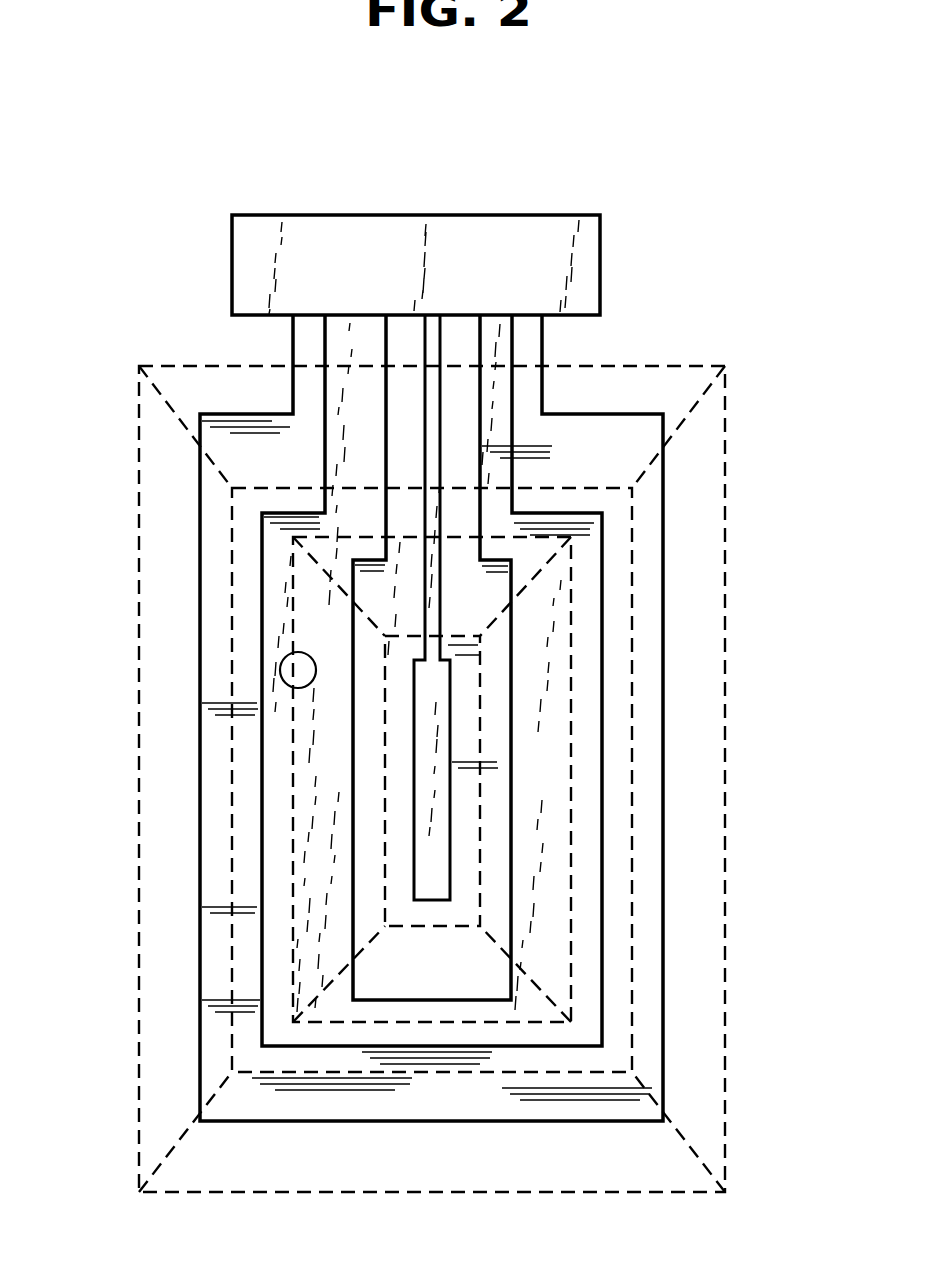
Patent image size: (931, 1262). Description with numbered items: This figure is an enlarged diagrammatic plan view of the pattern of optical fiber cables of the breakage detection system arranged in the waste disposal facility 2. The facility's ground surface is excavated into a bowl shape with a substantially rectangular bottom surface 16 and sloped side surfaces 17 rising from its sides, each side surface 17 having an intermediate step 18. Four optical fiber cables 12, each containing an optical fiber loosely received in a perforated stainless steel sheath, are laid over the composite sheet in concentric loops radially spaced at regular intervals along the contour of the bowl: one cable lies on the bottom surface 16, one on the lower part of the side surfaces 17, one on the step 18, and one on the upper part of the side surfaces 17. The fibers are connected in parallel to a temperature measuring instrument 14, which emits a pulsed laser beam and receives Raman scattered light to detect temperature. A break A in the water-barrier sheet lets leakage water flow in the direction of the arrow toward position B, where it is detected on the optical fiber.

The waste disposal facility 2 is at (652, 341).
The optical fiber cables 12 is at (258, 735).
The temperature measuring instrument 14 is at (452, 245).
The bottom surface 16 is at (463, 763).
The side surfaces 17 is at (698, 678).
The intermediate step 18 is at (618, 825).
The break A is at (299, 654).
The position B is at (322, 670).